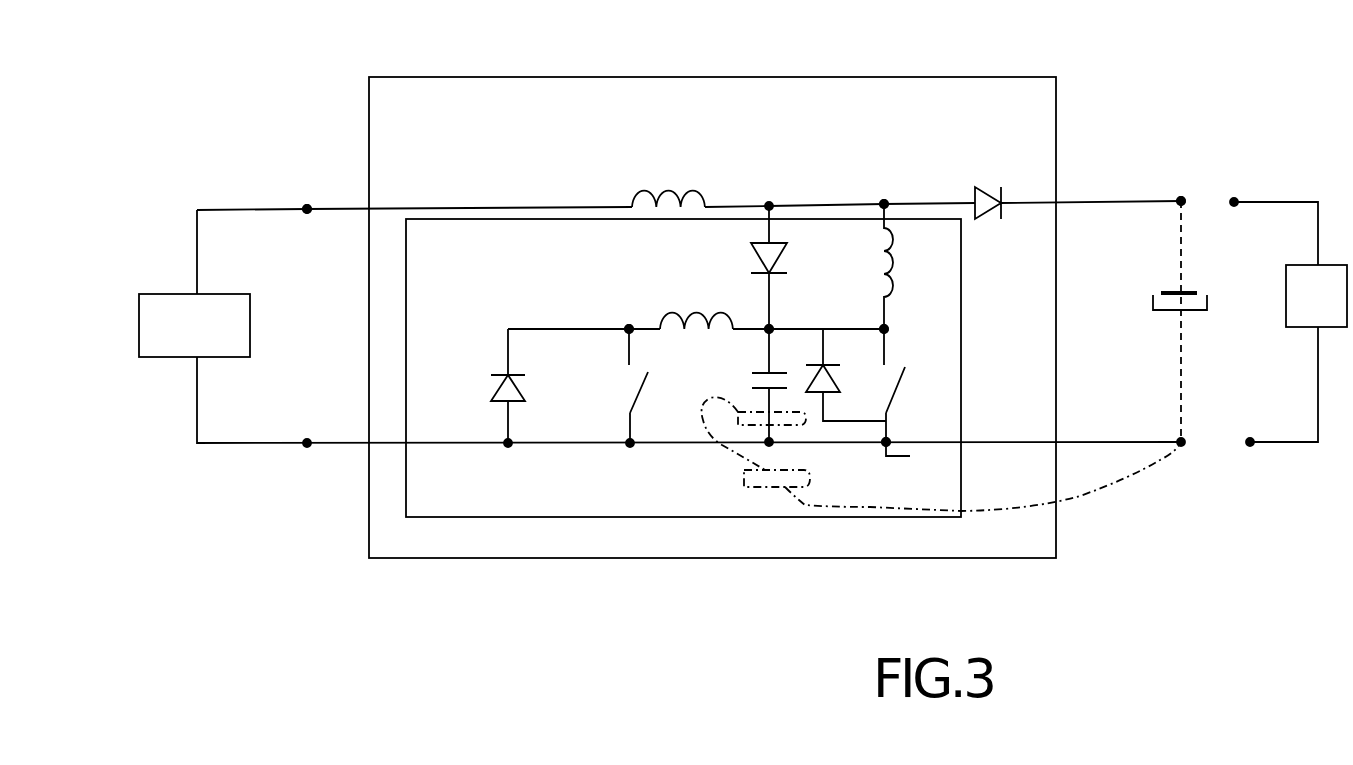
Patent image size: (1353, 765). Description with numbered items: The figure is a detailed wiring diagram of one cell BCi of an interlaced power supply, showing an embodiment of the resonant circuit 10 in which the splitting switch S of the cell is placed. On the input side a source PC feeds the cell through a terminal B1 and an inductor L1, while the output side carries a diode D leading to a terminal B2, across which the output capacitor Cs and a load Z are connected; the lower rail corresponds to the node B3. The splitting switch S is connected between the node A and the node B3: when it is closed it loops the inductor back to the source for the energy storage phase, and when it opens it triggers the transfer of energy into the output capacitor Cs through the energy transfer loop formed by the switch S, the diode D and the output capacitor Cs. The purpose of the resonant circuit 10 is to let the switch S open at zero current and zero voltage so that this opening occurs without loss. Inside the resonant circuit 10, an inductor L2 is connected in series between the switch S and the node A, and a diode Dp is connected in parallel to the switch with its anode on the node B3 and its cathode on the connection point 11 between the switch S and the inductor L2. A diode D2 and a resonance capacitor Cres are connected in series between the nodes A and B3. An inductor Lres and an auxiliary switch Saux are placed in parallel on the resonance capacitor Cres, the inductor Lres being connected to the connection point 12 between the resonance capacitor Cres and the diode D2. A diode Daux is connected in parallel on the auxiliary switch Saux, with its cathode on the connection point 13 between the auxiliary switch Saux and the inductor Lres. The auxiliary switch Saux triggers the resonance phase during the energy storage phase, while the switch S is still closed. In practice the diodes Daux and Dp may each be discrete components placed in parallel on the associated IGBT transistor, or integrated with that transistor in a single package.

The resonant circuit 10 is at (960, 474).
The connection point between switch S and inductor L2 11 is at (887, 329).
The connection point between resonance capacitor Cres and diode D2 12 is at (772, 328).
The connection point between auxiliary switch Saux and inductor Lres 13 is at (628, 327).
The input terminal B1 is at (307, 208).
The output terminal B2 is at (1181, 200).
The node B3 is at (915, 463).
The node A is at (884, 203).
The diode D is at (985, 186).
The diode D2 is at (756, 261).
The boost inductor L1 is at (668, 183).
The inductor L2 is at (907, 266).
The inductor Lres is at (684, 318).
The resonance capacitor Cres is at (735, 387).
The diode Daux is at (490, 390).
The auxiliary switch Saux is at (597, 388).
The diode Dp is at (838, 383).
The splitting switch S is at (908, 387).
The output capacitor Cs is at (1159, 321).
The load impedance Z is at (1288, 322).
The photovoltaic cell / source PC is at (194, 325).
The cell BCi is at (405, 559).